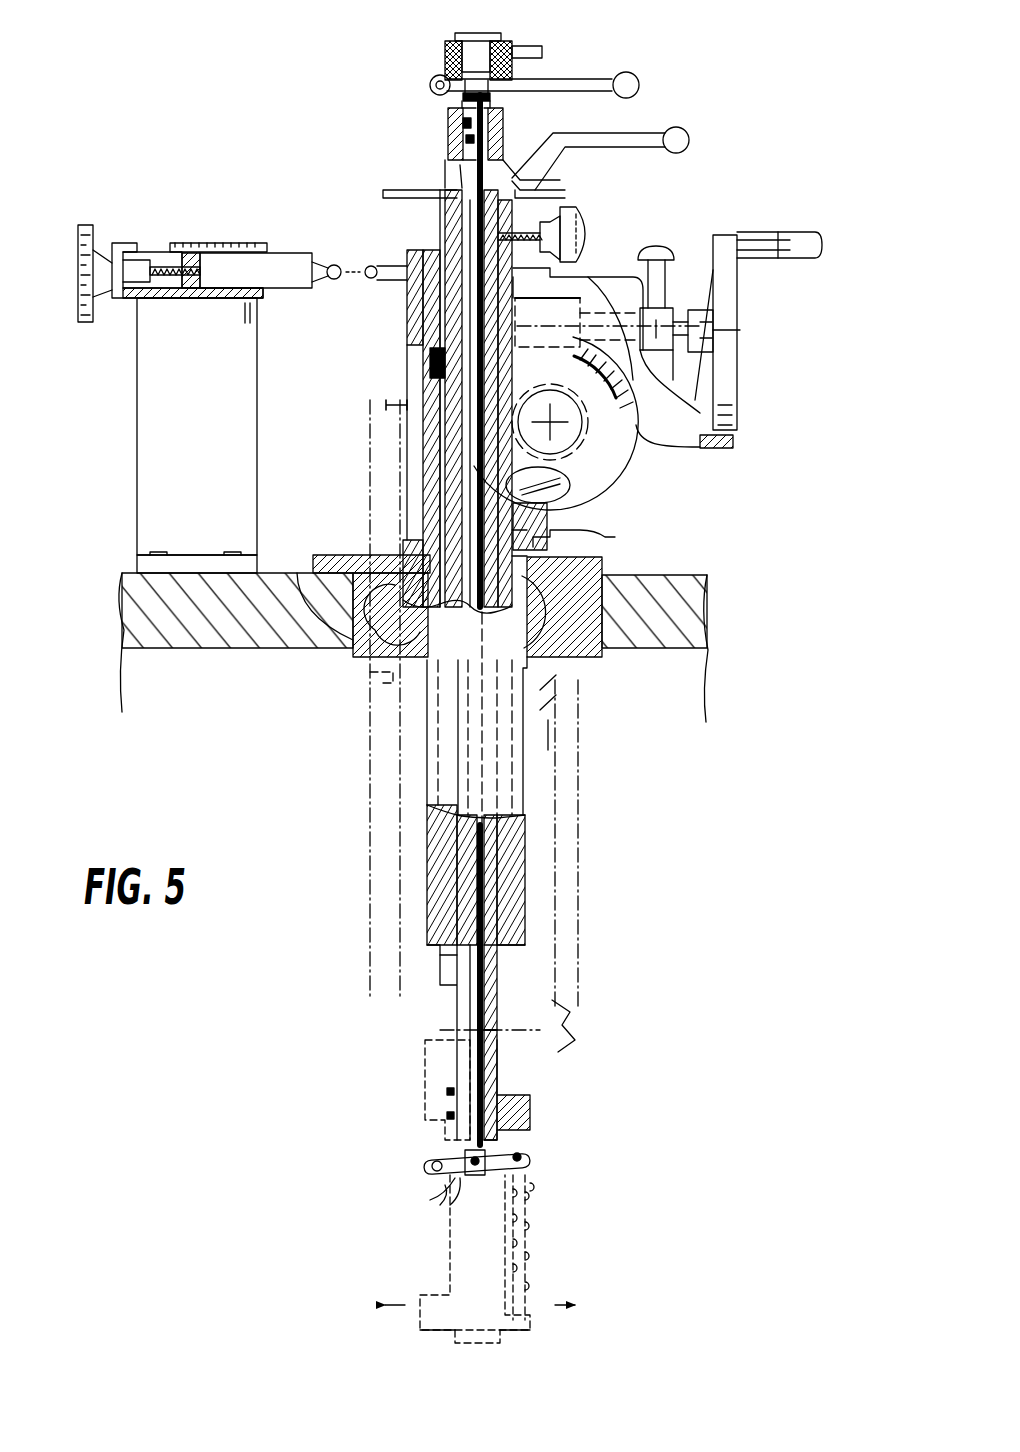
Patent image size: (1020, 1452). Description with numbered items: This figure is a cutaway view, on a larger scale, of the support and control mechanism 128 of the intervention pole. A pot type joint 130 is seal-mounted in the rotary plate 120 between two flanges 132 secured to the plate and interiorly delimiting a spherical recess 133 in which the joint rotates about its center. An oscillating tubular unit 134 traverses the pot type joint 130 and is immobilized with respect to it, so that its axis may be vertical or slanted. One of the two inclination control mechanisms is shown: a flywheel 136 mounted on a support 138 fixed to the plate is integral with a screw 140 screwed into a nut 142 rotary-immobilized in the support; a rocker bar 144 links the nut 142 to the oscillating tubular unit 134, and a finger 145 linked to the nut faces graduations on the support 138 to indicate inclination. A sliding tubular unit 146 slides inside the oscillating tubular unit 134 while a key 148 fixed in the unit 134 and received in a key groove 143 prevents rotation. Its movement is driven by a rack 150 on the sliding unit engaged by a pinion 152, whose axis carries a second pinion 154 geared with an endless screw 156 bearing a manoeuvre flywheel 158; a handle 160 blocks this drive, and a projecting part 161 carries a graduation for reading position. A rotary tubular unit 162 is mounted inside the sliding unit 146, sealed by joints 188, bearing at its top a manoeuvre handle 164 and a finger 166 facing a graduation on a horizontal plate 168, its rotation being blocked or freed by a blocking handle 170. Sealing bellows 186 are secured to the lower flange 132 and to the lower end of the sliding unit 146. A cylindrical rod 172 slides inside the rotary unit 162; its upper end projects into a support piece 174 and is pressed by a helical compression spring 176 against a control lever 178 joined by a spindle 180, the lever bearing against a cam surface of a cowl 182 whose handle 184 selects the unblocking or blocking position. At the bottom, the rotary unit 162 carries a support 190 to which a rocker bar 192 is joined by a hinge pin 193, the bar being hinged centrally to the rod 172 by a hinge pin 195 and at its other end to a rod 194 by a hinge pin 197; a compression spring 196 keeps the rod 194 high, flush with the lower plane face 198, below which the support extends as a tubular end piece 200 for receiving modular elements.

The rotary plate 120 is at (700, 630).
The support and control mechanism 128 is at (725, 536).
The pot type joint 130 is at (362, 658).
The flange 132 is at (318, 555).
The spherical recess 133 is at (560, 665).
The oscillating tubular unit 134 is at (445, 378).
The flywheel 136 is at (86, 225).
The support 138 is at (150, 362).
The screw 140 is at (152, 260).
The nut 142 is at (253, 262).
The key groove 143 is at (440, 432).
The rocker bar 144 is at (344, 265).
The finger 145 is at (205, 243).
The sliding tubular unit 146 is at (420, 318).
The key 148 is at (430, 362).
The rack 150 is at (580, 533).
The pinion 152 is at (612, 455).
The pinion 154 is at (713, 343).
The endless screw 156 is at (548, 300).
The manoeuvre flywheel 158 is at (737, 282).
The handle 160 is at (658, 250).
The projecting part 161 is at (735, 442).
The rotary tubular unit 162 is at (497, 968).
The manoeuvre handle 164 is at (690, 138).
The finger 166 is at (556, 176).
The horizontal plate 168 is at (410, 188).
The blocking handle 170 is at (580, 222).
The cylindrical rod 172 is at (450, 1012).
The support piece 174 is at (503, 132).
The helical compression spring 176 is at (447, 135).
The control lever 178 is at (636, 77).
The spindle 180 is at (430, 87).
The cowl 182 is at (515, 45).
The handle 184 is at (540, 50).
The sealing bellows 186 is at (572, 1046).
The joints 188 is at (520, 1112).
The support 190 is at (452, 1250).
The rocker bar 192 is at (432, 1178).
The hinge pin 193 is at (440, 1164).
The rod 194 is at (522, 1237).
The hinge pin 195 is at (450, 1185).
The compression spring 196 is at (533, 1190).
The hinge pin 197 is at (527, 1158).
The lower plane face 198 is at (430, 1325).
The tubular end piece 200 is at (512, 1336).